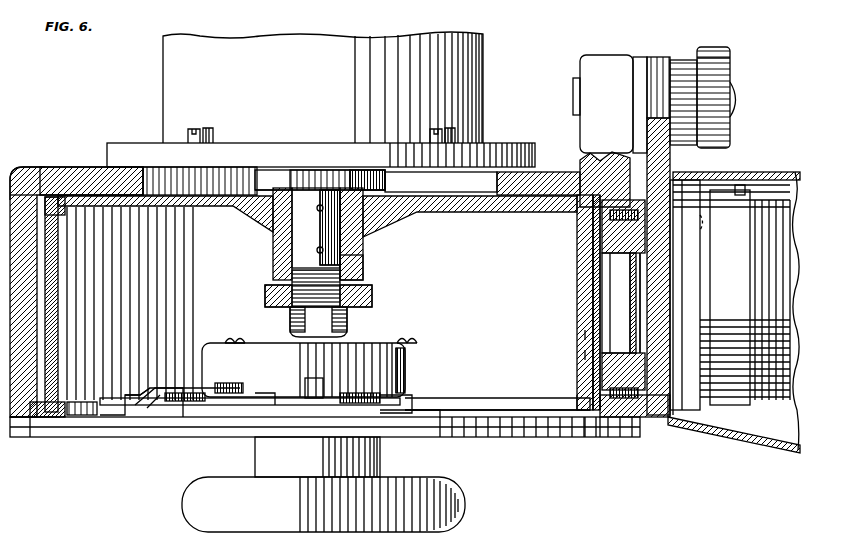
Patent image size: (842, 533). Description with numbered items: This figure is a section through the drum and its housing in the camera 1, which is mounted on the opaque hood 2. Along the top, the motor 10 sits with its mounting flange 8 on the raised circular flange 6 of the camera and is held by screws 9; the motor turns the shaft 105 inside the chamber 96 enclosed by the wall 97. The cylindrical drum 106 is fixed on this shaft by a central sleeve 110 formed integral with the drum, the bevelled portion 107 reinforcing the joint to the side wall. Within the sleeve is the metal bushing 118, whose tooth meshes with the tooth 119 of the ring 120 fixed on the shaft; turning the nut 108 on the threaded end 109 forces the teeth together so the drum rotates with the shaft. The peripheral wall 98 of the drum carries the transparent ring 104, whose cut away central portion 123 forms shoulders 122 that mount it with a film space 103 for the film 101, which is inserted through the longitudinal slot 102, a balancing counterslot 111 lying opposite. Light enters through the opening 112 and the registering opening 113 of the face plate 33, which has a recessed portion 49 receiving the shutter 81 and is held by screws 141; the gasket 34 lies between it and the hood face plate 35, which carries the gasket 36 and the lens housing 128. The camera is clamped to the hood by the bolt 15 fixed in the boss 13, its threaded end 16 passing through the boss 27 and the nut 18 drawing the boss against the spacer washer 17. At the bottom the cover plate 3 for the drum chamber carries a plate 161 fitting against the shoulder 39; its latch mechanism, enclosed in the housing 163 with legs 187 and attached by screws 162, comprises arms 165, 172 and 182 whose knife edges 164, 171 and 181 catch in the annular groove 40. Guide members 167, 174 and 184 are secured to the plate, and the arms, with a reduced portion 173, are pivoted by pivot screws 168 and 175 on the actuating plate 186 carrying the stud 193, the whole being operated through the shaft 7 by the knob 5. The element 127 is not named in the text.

The camera 1 is at (44, 157).
The hood 2 is at (778, 166).
The cover plate 3 is at (107, 438).
The knob 5 is at (190, 507).
The flange 6 is at (107, 167).
The shaft 7 is at (256, 465).
The mounting flange 8 is at (125, 143).
The screws 9 is at (206, 129).
The motor 10 is at (162, 82).
The boss 13 is at (607, 55).
The bolt 15 is at (573, 96).
The threaded end 16 is at (738, 102).
The spacer washer 17 is at (640, 57).
The nut 18 is at (733, 62).
The boss 27 is at (660, 57).
The face plate 33 is at (645, 150).
The gasket 34 is at (640, 419).
The face plate 35 is at (660, 420).
The gasket 36 is at (680, 425).
The shoulder 39 is at (30, 438).
The annular groove 40 is at (45, 438).
The recessed portion 49 is at (636, 272).
The shutter 81 is at (637, 318).
The chamber 96 is at (78, 176).
The wall 97 is at (26, 170).
The peripheral wall 98 is at (578, 396).
The film 101 is at (60, 302).
The longitudinal slot 102 is at (66, 214).
The film space 103 is at (582, 336).
The ring 104 is at (582, 356).
The shaft 105 is at (340, 276).
The drum 106 is at (490, 214).
The bevelled portion 107 is at (262, 222).
The nut 108 is at (372, 301).
The threaded end 109 is at (350, 330).
The sleeve 110 is at (368, 280).
The counterslot 111 is at (583, 265).
The optical opening 112 is at (612, 302).
The opening 113 is at (642, 293).
The bushing 118 is at (352, 260).
The tooth 119 is at (310, 189).
The ring 120 is at (285, 190).
The shoulders 122 is at (579, 216).
The cut away central portion 123 is at (581, 241).
The collar 127 is at (357, 186).
The lens housing 128 is at (745, 297).
The screws 141 is at (582, 170).
The plate 161 is at (605, 438).
The screws 162 is at (245, 338).
The housing 163 is at (406, 378).
The knife edge 164 is at (287, 418).
The arm 165 is at (340, 415).
The guide member 167 is at (368, 418).
The pivot screw 168 is at (406, 360).
The knife edge 171 is at (77, 420).
The arm 172 is at (140, 416).
The reduced portion 173 is at (192, 394).
The guide member 174 is at (112, 422).
The pivot screw 175 is at (232, 383).
The knife edge 181 is at (590, 438).
The arm 182 is at (492, 420).
The guide member 184 is at (530, 420).
The actuating plate 186 is at (420, 418).
The legs 187 is at (412, 400).
The stud 193 is at (320, 382).